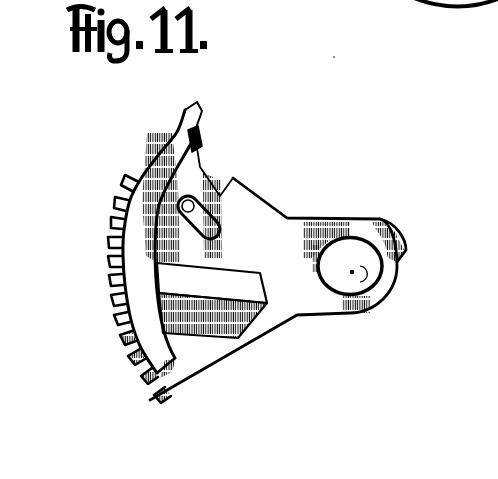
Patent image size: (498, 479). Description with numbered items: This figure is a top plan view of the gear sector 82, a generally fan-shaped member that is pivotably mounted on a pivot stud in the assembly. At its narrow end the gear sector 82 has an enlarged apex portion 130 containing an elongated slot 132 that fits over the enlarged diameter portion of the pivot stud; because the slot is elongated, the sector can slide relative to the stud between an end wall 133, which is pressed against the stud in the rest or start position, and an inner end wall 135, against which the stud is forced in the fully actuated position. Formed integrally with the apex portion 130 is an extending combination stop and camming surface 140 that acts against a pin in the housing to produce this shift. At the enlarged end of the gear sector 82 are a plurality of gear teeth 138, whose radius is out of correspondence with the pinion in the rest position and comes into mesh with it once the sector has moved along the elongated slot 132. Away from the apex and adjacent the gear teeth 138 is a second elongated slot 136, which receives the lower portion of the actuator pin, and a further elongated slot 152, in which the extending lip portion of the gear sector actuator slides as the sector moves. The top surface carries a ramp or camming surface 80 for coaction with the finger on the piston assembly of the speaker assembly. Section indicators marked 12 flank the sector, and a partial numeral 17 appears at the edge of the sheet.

The ramp or camming surface 80 is at (118, 252).
The gear sector 82 is at (306, 257).
The enlarged apex portion 130 is at (345, 220).
The elongated slot 132 is at (352, 272).
The end wall 133 is at (320, 272).
The inner end wall 135 is at (398, 285).
The second elongated slot 136 is at (203, 196).
The gear teeth 138 is at (122, 214).
The combination stop and camming surface 140 is at (408, 255).
The further elongated slot 152 is at (203, 285).
The section line 12- 12 is at (85, 447).
The partial numeral 17 is at (492, 294).